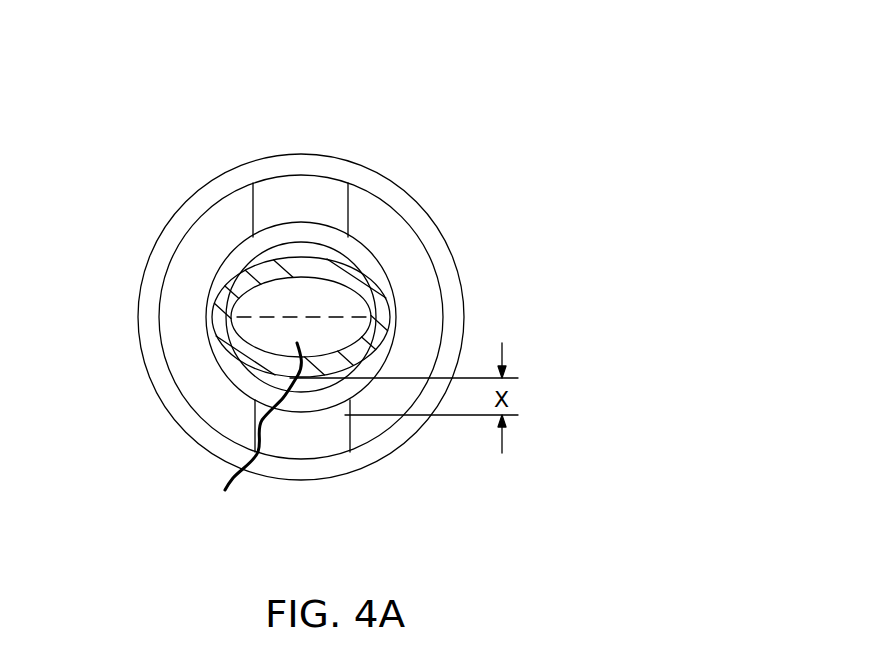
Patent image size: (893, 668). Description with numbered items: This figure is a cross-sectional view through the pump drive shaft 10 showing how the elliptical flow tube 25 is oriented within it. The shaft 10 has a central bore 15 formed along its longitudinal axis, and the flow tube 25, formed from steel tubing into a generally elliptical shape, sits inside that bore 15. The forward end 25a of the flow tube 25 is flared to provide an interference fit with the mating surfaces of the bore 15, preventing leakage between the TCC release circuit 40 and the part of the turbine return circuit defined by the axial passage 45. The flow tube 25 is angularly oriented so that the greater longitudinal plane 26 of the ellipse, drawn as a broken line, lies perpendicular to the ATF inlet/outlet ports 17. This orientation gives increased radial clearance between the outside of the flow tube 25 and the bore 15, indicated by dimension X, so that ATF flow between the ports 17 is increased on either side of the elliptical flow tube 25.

The pump drive shaft 10 is at (337, 101).
The central bore 15 is at (257, 257).
The ATF inlet/outlet port 17 is at (292, 190).
The flow tube 25 is at (372, 293).
The forward end of the flow tube 25a is at (328, 253).
The greater longitudinal plane 26 is at (245, 320).
The TCC release circuit 40 is at (249, 435).
The axial passage 45 is at (208, 320).